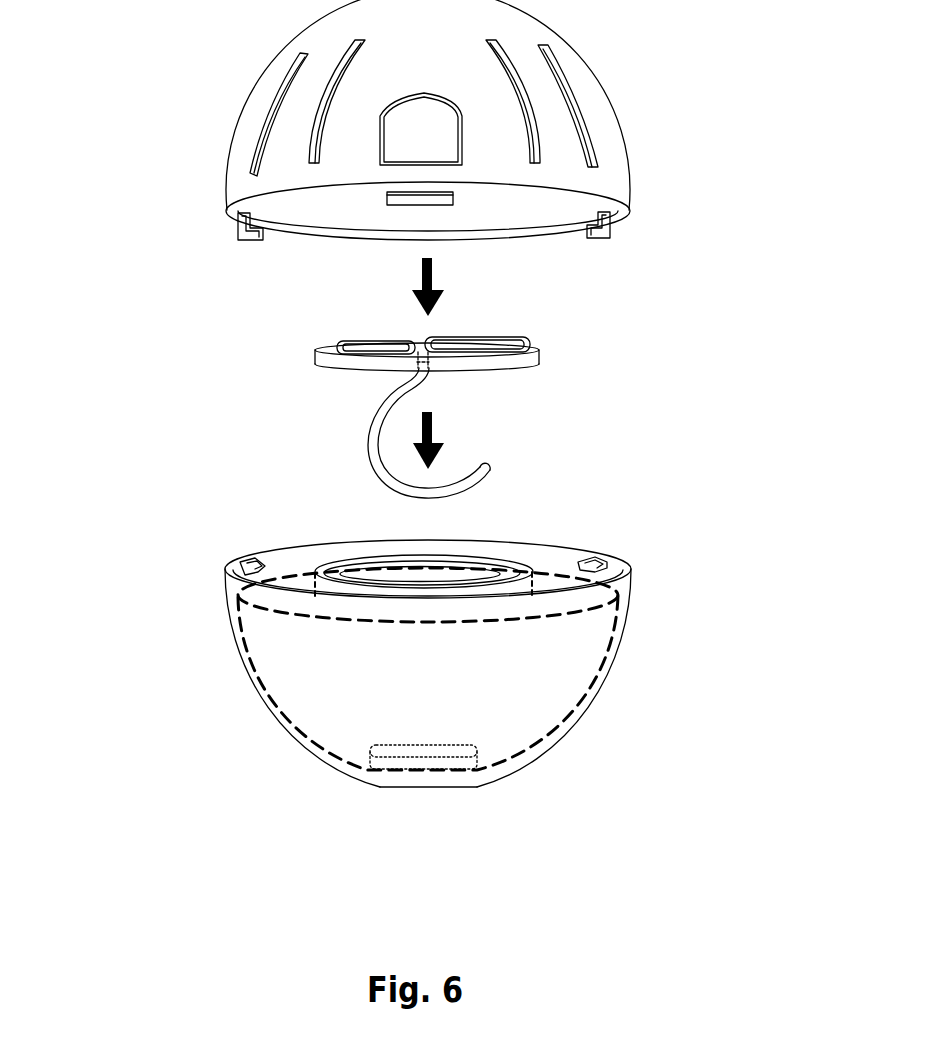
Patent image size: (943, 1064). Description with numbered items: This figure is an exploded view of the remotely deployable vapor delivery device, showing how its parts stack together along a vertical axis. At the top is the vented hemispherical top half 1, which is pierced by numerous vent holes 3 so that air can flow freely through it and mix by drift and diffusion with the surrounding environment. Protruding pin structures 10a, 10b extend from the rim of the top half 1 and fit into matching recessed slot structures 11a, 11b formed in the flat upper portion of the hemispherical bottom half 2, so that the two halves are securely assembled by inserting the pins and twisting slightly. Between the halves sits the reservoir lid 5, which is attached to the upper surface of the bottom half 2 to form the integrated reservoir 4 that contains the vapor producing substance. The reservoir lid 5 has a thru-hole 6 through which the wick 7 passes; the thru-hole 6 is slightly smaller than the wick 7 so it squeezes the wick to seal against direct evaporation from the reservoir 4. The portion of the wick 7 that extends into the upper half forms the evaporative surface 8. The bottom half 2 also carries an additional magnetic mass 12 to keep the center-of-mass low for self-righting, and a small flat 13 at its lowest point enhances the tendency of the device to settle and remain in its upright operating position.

The vented hemispherical top half 1 is at (260, 78).
The hemispherical bottom half 2 is at (253, 668).
The vent holes 3 is at (253, 157).
The integrated reservoir 4 is at (300, 745).
The reservoir lid 5 is at (327, 363).
The thru-hole 6 is at (430, 363).
The wick 7 is at (484, 484).
The evaporative surface 8 is at (356, 342).
The protruding pin structure 10a is at (236, 231).
The protruding pin structure 10b is at (612, 231).
The recessed slot structure 11a is at (243, 566).
The recessed slot structure 11b is at (610, 562).
The additional magnetic mass 12 is at (467, 755).
The small flat 13 is at (460, 787).